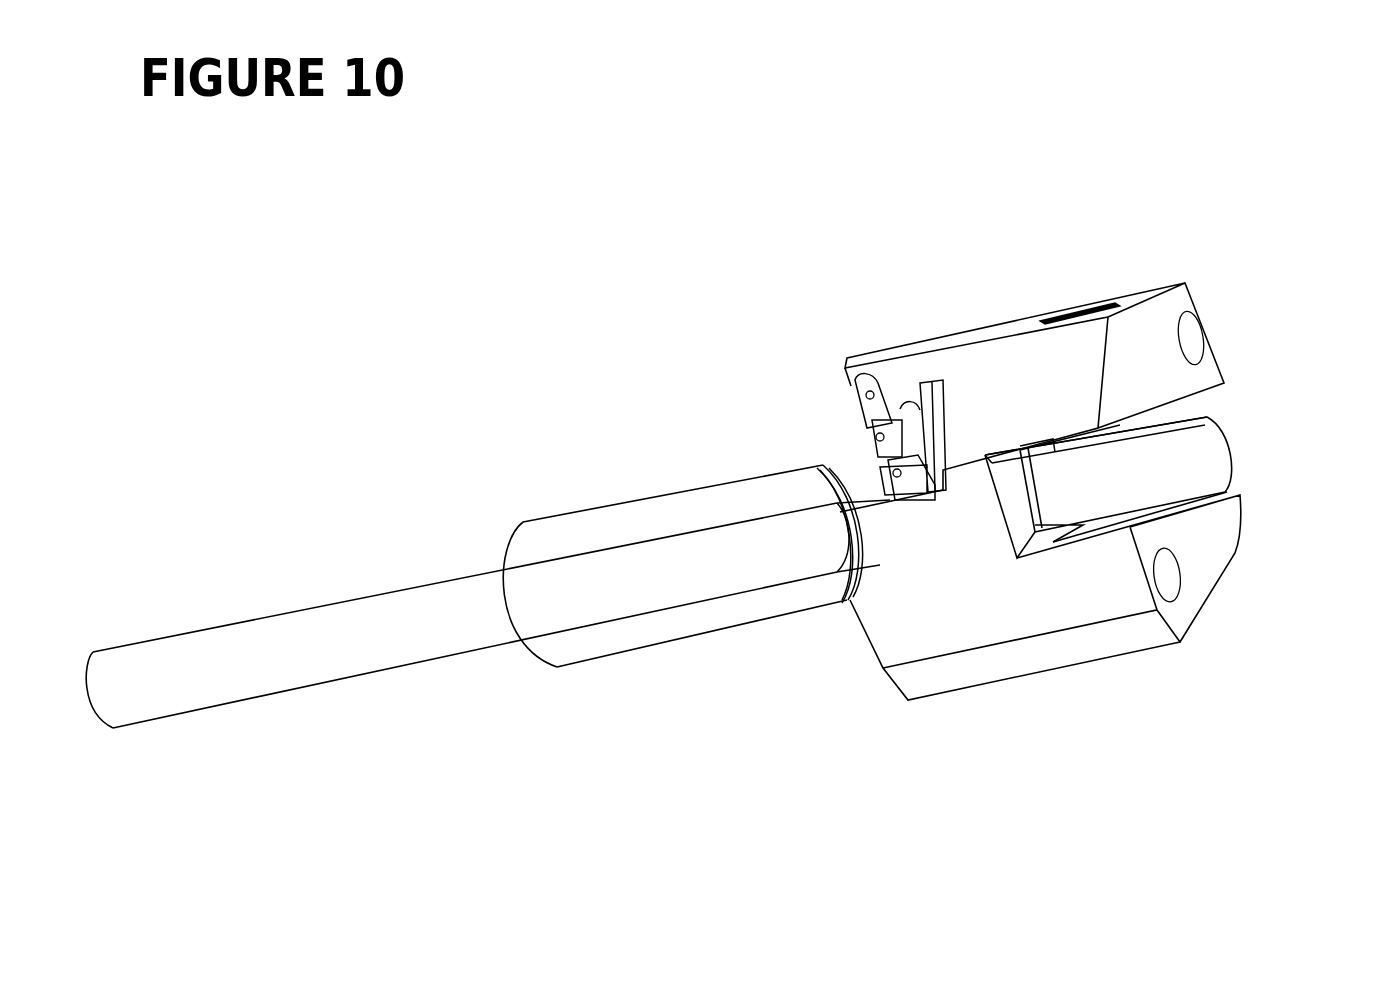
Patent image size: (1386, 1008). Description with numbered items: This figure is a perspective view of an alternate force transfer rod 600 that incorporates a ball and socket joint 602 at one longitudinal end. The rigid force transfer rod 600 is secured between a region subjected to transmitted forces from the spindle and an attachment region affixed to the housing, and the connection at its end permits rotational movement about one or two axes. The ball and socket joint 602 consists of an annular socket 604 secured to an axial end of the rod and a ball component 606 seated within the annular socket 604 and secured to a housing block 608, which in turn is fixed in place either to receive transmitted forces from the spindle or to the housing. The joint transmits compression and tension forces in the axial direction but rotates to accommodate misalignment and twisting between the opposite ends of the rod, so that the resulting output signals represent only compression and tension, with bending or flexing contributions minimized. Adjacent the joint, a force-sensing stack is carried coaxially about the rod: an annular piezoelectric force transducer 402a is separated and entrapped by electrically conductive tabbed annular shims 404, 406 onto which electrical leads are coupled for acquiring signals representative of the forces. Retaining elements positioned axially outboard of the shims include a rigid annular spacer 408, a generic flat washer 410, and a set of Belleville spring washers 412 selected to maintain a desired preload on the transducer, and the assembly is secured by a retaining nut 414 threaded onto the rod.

The rigid force transfer rod 600 is at (331, 610).
The retaining nut 414 is at (666, 486).
The rigid annular spacer 408 is at (837, 493).
The Belleville spring washers 412 is at (809, 546).
The flat washer 410 is at (907, 389).
The tabbed annular shim 406 is at (829, 377).
The tabbed annular shim 404 is at (848, 421).
The annular piezoelectric force transducer 402a is at (929, 412).
The ball and socket joint 602 is at (1267, 431).
The ball component 606 is at (1168, 401).
The annular socket 604 is at (1159, 480).
The housing block 608 is at (1008, 615).